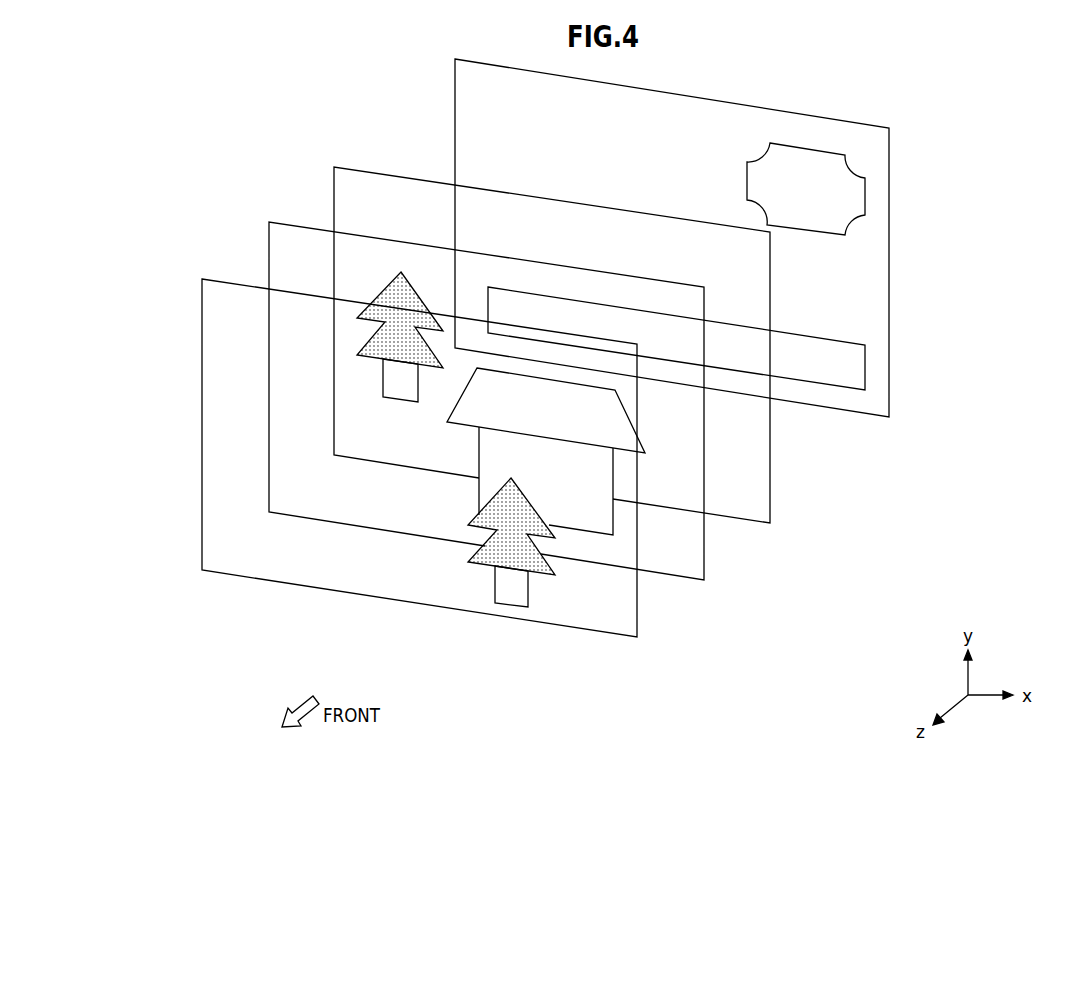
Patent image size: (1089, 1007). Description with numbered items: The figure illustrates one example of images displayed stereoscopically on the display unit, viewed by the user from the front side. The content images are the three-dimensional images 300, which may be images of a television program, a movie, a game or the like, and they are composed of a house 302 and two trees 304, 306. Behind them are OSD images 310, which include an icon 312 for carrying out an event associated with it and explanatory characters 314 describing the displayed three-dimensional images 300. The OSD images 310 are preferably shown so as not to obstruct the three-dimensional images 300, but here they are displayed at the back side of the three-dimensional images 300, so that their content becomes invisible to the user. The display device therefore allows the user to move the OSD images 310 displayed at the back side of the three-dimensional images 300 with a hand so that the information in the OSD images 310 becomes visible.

The 3D images 300 is at (867, 449).
The house 302 is at (567, 513).
The tree 304 is at (510, 598).
The tree 306 is at (393, 293).
The OSD images 310 is at (923, 407).
The icon 312 is at (866, 184).
The explanatory characters 314 is at (866, 355).